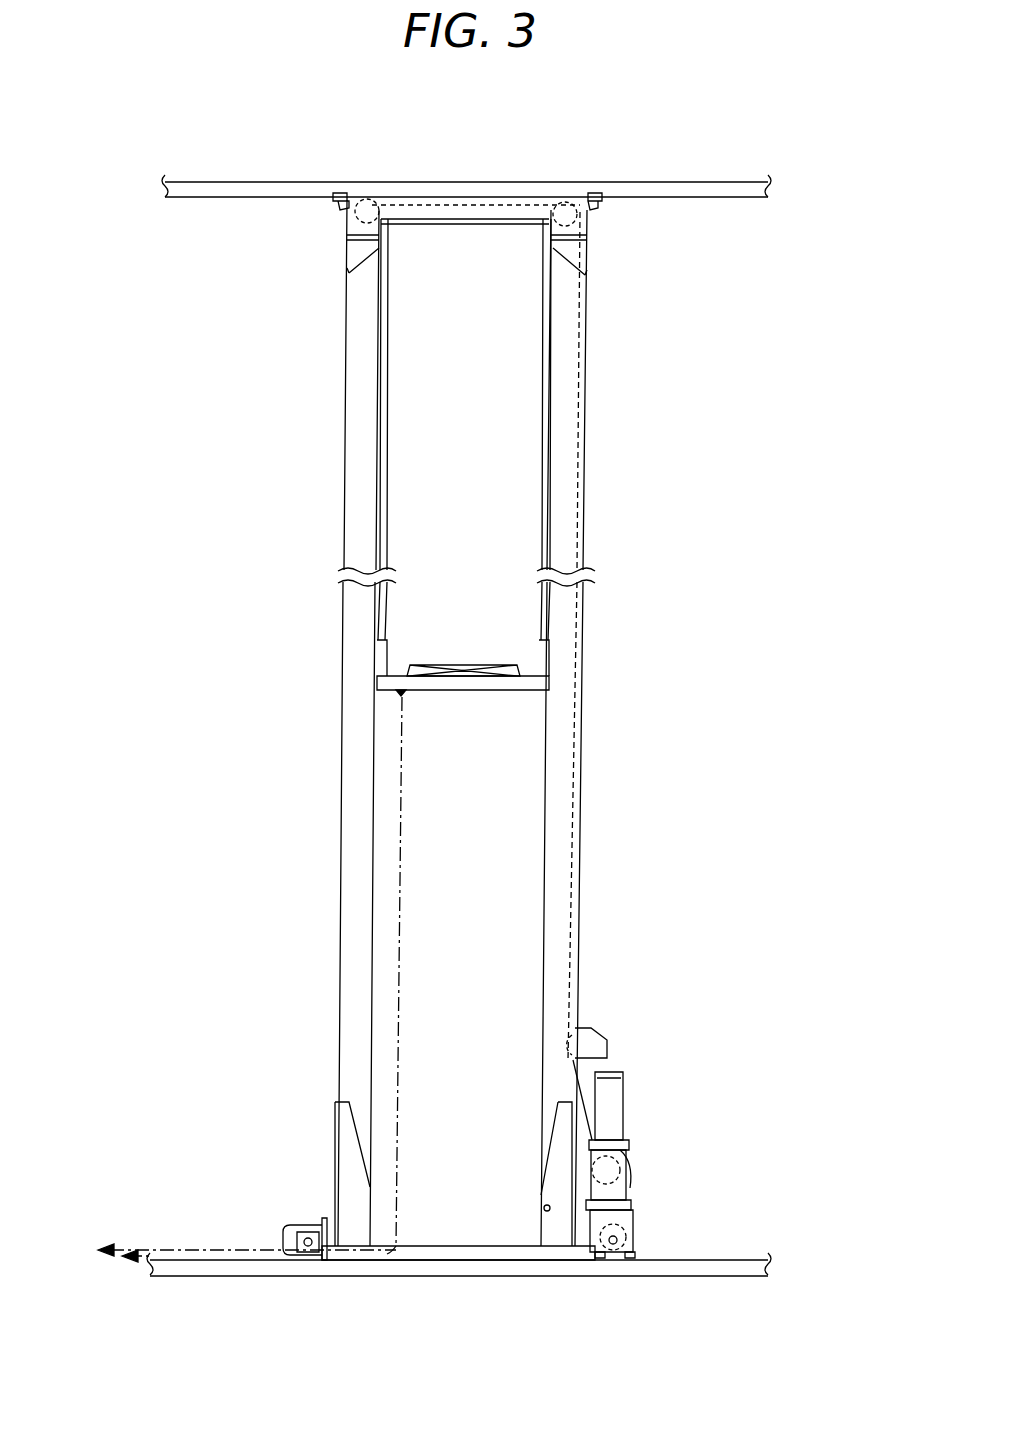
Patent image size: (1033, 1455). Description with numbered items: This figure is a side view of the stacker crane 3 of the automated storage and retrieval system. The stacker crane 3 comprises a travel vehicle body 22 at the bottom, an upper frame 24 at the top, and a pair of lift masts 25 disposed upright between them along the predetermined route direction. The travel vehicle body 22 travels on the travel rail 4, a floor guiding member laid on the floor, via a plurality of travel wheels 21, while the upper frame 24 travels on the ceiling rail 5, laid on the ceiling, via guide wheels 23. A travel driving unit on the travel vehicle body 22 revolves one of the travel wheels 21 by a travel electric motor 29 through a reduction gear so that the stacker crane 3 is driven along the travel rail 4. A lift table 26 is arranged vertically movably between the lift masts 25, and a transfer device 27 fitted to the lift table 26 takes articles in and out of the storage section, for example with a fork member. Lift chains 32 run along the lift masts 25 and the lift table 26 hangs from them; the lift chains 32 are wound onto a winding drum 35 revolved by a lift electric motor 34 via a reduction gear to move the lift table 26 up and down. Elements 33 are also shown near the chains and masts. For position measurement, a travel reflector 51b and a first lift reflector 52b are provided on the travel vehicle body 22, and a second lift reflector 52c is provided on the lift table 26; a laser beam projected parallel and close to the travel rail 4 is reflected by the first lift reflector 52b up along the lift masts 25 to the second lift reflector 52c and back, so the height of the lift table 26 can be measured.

The stacker crane 3 is at (318, 690).
The travel rail 4 is at (211, 1277).
The ceiling rail 5 is at (212, 198).
The travel wheels 21 is at (300, 1225).
The travel vehicle body 22 is at (470, 1245).
The guide wheels 23 is at (376, 202).
The upper frame 24 is at (486, 226).
The lift masts 25 is at (566, 703).
The lift table 26 is at (470, 692).
The transfer device 27 is at (460, 664).
The travel electric motor 29 is at (610, 1215).
The lift chains 32 is at (546, 380).
The pulley 33 is at (390, 210).
The lift electric motor 34 is at (620, 1077).
The winding drum 35 is at (622, 1157).
The travel reflector 51b is at (324, 1262).
The first lift reflector 52b is at (400, 1246).
The second lift reflector 52c is at (402, 698).